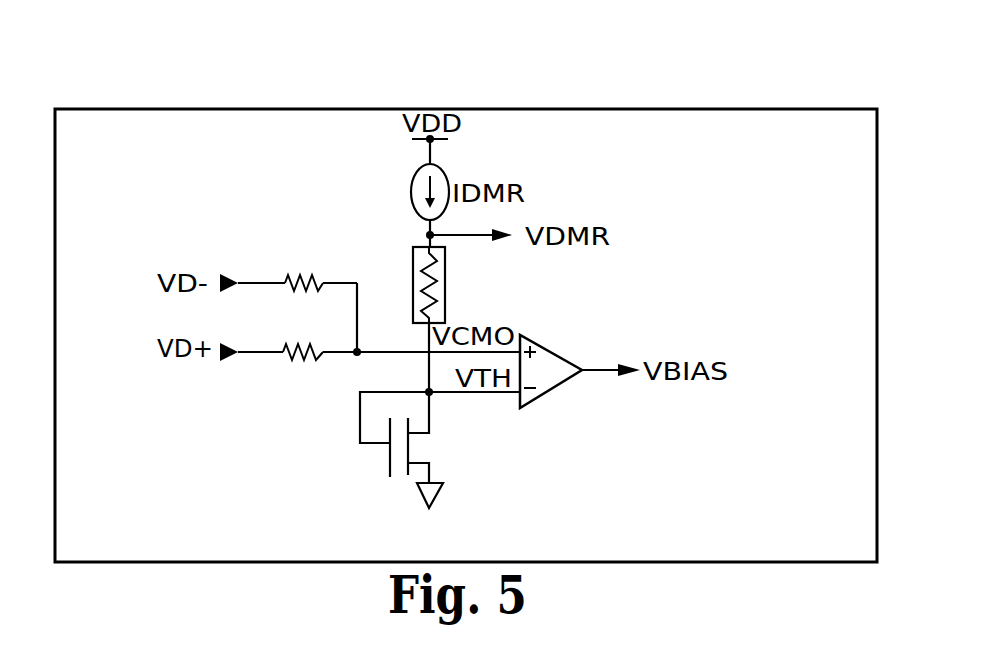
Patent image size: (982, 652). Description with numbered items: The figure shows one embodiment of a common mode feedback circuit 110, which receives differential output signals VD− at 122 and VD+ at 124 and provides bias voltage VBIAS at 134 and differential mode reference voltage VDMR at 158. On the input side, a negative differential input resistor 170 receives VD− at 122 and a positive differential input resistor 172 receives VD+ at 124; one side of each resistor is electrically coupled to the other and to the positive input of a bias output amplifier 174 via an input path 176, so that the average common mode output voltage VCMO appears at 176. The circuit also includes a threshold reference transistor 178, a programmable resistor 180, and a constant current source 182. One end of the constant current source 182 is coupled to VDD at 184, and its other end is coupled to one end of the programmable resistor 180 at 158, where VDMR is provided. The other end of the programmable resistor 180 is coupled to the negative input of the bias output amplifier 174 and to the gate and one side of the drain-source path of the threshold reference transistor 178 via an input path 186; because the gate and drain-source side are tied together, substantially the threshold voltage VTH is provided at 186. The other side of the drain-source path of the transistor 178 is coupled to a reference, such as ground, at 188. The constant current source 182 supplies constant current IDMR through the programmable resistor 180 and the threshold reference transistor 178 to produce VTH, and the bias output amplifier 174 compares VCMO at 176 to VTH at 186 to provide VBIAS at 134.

The common mode feedback circuit 110 is at (636, 78).
The differential output signal VD− input 122 is at (238, 277).
The differential output signal VD+ input 124 is at (225, 358).
The bias voltage VBIAS output 134 is at (628, 362).
The differential mode reference voltage VDMR node 158 is at (506, 231).
The negative differential input resistor 170 is at (288, 273).
The positive differential input resistor 172 is at (287, 355).
The bias output amplifier 174 is at (550, 351).
The input path 176 is at (357, 282).
The threshold reference transistor 178 is at (389, 477).
The programmable resistor 180 is at (447, 292).
The constant current source 182 is at (446, 169).
The VDD 184 is at (426, 141).
The input path 186 is at (360, 393).
The reference (ground) 188 is at (444, 496).